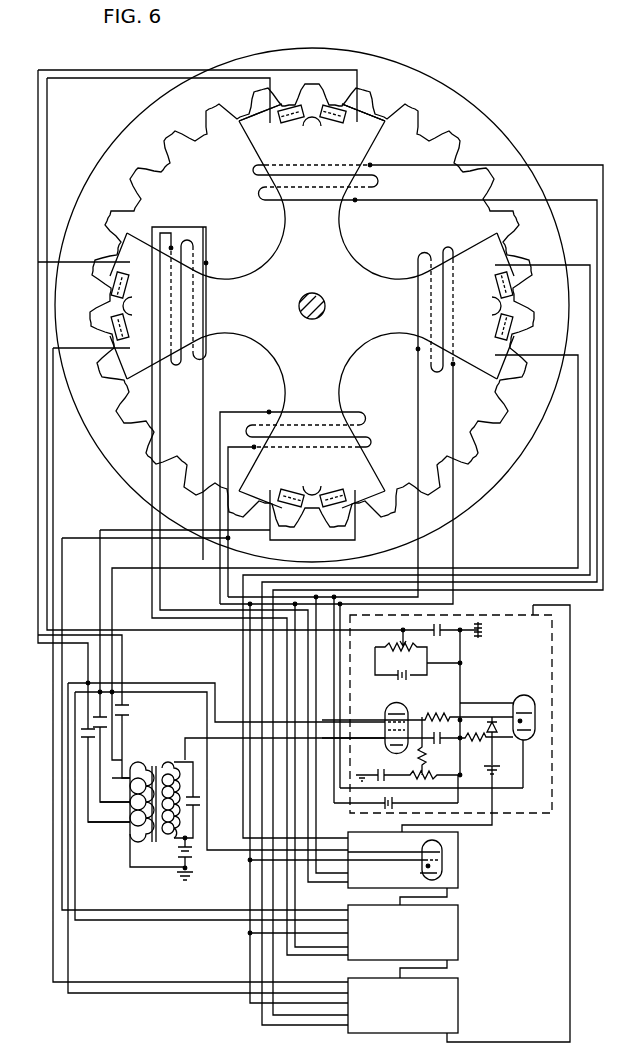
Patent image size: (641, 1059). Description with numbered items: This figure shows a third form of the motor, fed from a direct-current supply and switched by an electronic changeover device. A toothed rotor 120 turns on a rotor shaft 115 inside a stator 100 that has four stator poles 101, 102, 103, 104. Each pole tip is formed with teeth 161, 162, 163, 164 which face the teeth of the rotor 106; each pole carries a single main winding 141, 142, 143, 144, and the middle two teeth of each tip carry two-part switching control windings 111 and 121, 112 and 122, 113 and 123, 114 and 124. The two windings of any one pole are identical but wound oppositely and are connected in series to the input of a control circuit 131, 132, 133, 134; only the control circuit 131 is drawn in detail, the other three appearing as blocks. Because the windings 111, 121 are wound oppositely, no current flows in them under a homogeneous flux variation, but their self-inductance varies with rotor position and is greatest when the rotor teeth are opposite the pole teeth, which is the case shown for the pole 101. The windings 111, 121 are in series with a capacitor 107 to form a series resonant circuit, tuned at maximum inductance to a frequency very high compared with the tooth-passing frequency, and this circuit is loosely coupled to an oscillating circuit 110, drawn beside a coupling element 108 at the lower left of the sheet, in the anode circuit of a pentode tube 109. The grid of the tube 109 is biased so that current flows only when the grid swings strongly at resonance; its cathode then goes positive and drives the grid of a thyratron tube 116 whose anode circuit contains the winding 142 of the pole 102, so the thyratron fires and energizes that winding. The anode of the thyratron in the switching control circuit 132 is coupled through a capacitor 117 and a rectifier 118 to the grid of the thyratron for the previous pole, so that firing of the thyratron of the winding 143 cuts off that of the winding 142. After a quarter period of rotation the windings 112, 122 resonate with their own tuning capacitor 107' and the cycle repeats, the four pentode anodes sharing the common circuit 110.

The stator 100 is at (270, 342).
The stator pole 101 is at (272, 162).
The stator pole 102 is at (460, 252).
The stator pole 103 is at (360, 456).
The stator pole 104 is at (154, 246).
The rotor teeth 106 is at (340, 101).
The capacitor 107 is at (135, 722).
The tuning capacitor 107' is at (120, 737).
The transformer primary winding 108 is at (166, 834).
The pentode tube 109 is at (390, 709).
The oscillating circuit 110 is at (198, 829).
The switching control winding 111 is at (291, 122).
The switching control winding 112 is at (497, 288).
The switching control winding 113 is at (336, 490).
The switching control winding 114 is at (127, 325).
The rotor shaft 115 is at (313, 298).
The thyratron tube 116 is at (531, 701).
The capacitor 117 is at (462, 793).
The rectifier 118 is at (494, 736).
The rotor 120 is at (107, 152).
The switching control winding 121 is at (336, 122).
The switching control winding 122 is at (497, 333).
The switching control winding 123 is at (291, 490).
The switching control winding 124 is at (127, 285).
The control circuit 131 is at (537, 818).
The switching control circuit 132 is at (452, 860).
The control circuit 133 is at (458, 945).
The control circuit 134 is at (458, 1011).
The winding 141 is at (264, 188).
The winding 142 is at (432, 358).
The winding 143 is at (352, 421).
The winding 144 is at (183, 351).
The tooth 161 is at (255, 119).
The tooth 162 is at (289, 101).
The tooth 163 is at (356, 104).
The tooth 164 is at (384, 121).